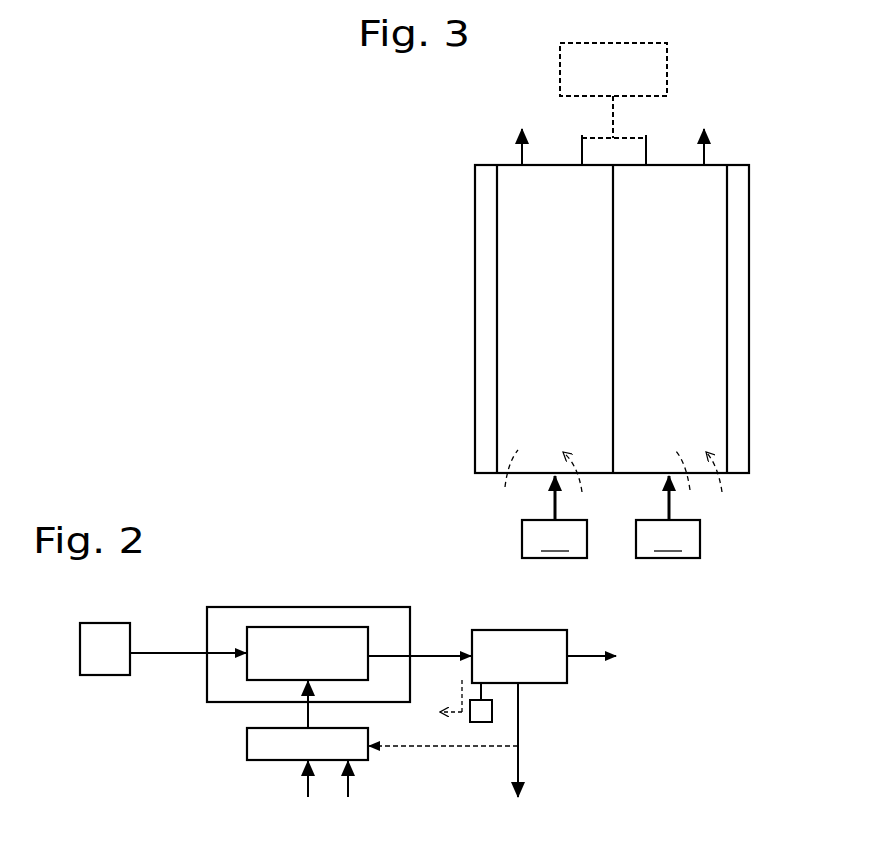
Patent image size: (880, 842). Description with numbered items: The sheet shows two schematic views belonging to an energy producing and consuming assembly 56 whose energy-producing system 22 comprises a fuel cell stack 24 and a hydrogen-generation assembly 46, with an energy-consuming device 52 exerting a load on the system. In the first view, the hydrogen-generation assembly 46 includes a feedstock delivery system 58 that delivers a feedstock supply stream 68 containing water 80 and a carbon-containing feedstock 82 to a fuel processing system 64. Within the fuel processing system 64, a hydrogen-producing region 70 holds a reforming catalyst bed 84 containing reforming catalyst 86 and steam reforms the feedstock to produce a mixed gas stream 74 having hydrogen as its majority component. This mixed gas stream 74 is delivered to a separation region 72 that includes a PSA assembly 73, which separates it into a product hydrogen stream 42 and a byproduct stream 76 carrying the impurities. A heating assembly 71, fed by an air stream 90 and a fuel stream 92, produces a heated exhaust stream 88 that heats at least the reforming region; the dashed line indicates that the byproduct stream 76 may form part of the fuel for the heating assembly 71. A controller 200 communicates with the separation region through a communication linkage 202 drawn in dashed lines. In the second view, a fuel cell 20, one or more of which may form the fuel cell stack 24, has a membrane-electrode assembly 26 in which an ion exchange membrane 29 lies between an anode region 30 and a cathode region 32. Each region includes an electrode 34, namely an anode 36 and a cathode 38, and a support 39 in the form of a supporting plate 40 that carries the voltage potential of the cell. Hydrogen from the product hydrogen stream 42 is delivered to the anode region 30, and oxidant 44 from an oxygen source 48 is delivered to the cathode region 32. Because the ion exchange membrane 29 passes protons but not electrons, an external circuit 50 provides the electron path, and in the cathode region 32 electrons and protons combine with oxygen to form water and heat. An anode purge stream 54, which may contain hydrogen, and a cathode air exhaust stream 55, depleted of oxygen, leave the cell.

In FIG. 3, the fuel cell 20 is at (434, 243).
In FIG. 3, the energy-producing system 22 is at (764, 99).
In FIG. 3, the fuel cell stack 24 is at (392, 195).
In FIG. 3, the membrane-electrode assembly 26 is at (613, 482).
In FIG. 3, the ion exchange membrane 29 is at (613, 283).
In FIG. 3, the anode region 30 is at (494, 372).
In FIG. 3, the cathode region 32 is at (734, 392).
In FIG. 3, the electrode 34 is at (651, 486).
In FIG. 3, the anode 36 is at (502, 485).
In FIG. 3, the cathode 38 is at (691, 485).
In FIG. 3, the support 39 is at (474, 256).
In FIG. 3, the supporting plate 40 is at (475, 310).
In FIG. 3, the product hydrogen stream 42 is at (554, 510).
In FIG. 2, the product hydrogen stream 42 is at (585, 660).
In FIG. 3, the oxidant 44 is at (668, 510).
In FIG. 3, the hydrogen-generation assembly 46 is at (554, 539).
In FIG. 2, the hydrogen-generation assembly 46 is at (382, 557).
In FIG. 3, the oxygen source 48 is at (668, 539).
In FIG. 3, the external circuit 50 is at (600, 138).
In FIG. 3, the energy-consuming device 52 is at (667, 68).
In FIG. 3, the anode purge stream 54 is at (521, 158).
In FIG. 3, the cathode air exhaust stream 55 is at (705, 158).
In FIG. 3, the energy producing and consuming assembly 56 is at (446, 99).
In FIG. 2, the feedstock delivery system 58 is at (79, 622).
In FIG. 2, the fuel processing system 64 is at (460, 562).
In FIG. 2, the feedstock supply stream 68 is at (182, 649).
In FIG. 2, the hydrogen-producing region 70 is at (249, 605).
In FIG. 2, the heating assembly 71 is at (246, 744).
In FIG. 2, the separation region 72 is at (507, 629).
In FIG. 2, the PSA assembly 73 is at (532, 642).
In FIG. 2, the mixed gas stream 74 is at (427, 655).
In FIG. 2, the byproduct stream 76 is at (520, 722).
In FIG. 2, the water 80 is at (160, 656).
In FIG. 2, the carbon-containing feedstock 82 is at (190, 656).
In FIG. 2, the reforming catalyst bed 84 is at (300, 627).
In FIG. 2, the reforming catalyst 86 is at (330, 640).
In FIG. 2, the heated exhaust stream 88 is at (309, 710).
In FIG. 2, the air stream 90 is at (308, 790).
In FIG. 2, the fuel stream 92 is at (349, 790).
In FIG. 2, the controller 200 is at (484, 728).
In FIG. 2, the communication linkage 202 is at (462, 680).